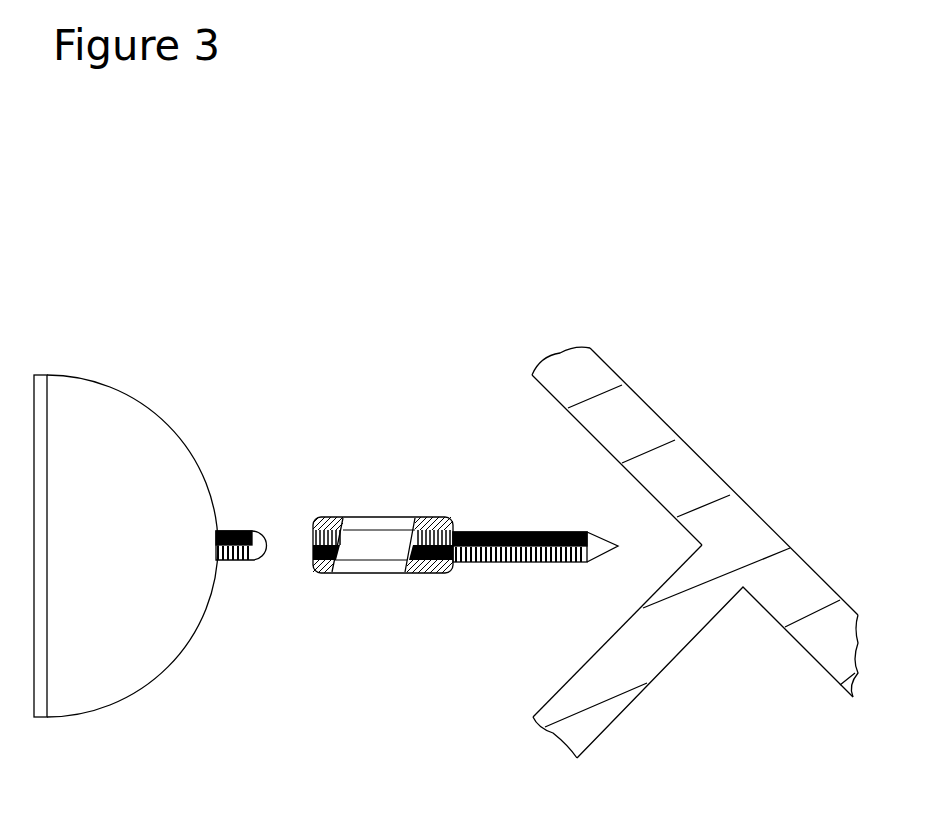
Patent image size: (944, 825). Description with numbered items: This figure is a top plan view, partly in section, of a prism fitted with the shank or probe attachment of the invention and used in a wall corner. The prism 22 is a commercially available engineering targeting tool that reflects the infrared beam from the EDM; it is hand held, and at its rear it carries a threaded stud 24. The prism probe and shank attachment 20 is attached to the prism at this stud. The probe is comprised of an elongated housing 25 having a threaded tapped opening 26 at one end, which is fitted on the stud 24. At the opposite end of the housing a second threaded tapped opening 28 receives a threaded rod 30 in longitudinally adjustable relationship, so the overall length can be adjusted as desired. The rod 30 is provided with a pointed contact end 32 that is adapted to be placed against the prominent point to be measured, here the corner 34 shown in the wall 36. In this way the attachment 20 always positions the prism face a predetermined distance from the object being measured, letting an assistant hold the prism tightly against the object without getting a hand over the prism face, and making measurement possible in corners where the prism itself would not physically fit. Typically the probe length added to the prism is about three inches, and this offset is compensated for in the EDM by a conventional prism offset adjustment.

The prism probe and shank attachment 20 is at (372, 530).
The prism 22 is at (133, 395).
The threaded stud 24 is at (237, 530).
The elongated housing 25 is at (380, 575).
The threaded tapped opening 26 is at (310, 563).
The threaded tapped opening 28 is at (457, 528).
The threaded rod 30 is at (535, 561).
The pointed contact end 32 is at (616, 542).
The corner 34 is at (602, 732).
The wall 36 is at (670, 430).